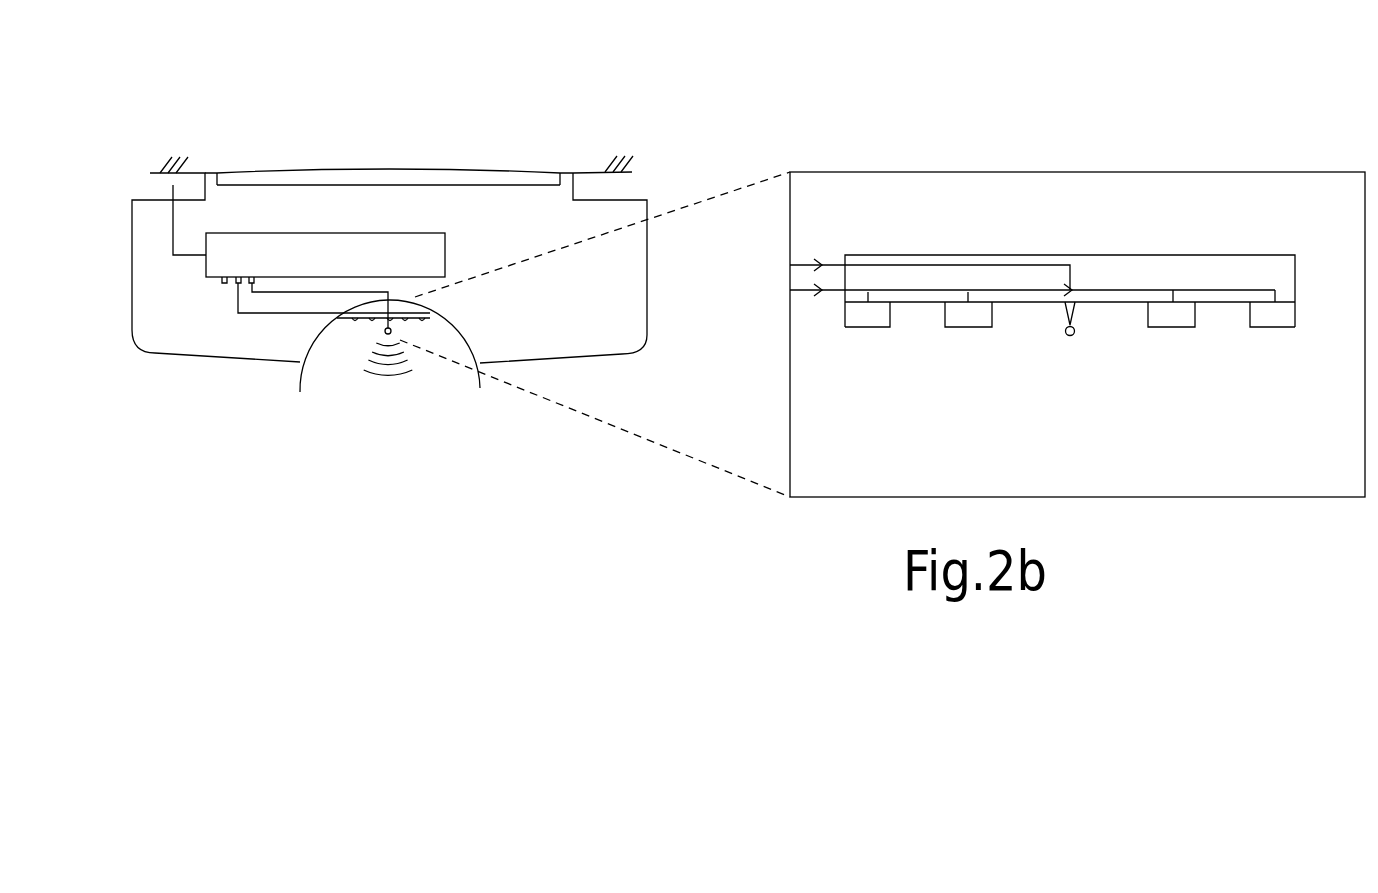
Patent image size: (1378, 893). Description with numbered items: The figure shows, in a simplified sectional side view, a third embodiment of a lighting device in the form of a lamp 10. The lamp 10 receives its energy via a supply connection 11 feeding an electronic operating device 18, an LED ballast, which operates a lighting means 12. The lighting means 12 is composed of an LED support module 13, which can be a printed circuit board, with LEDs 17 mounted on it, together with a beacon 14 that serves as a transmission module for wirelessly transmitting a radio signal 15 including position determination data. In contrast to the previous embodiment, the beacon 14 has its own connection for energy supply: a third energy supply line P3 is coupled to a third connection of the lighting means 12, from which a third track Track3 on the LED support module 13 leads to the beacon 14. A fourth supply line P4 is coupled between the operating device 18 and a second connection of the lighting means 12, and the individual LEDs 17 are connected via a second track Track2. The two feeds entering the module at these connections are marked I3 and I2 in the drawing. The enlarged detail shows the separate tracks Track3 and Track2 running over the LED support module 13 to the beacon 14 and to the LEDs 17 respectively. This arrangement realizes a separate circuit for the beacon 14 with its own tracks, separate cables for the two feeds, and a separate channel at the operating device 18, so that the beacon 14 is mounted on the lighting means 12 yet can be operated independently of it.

The lamp 10 is at (302, 132).
The supply connection 11 is at (173, 190).
The electronic operating device 18 is at (375, 247).
The fourth supply line P4 is at (238, 300).
The third energy supply line P3 is at (296, 293).
The lighting means 12 is at (365, 322).
The beacon 14 is at (393, 322).
The radio signal 15 is at (388, 375).
The LED support module 13 is at (1288, 272).
The LEDs 17 is at (1278, 328).
The third track Track3 is at (963, 256).
The second track Track2 is at (1210, 290).
The current I3 is at (790, 265).
The current I2 is at (790, 290).